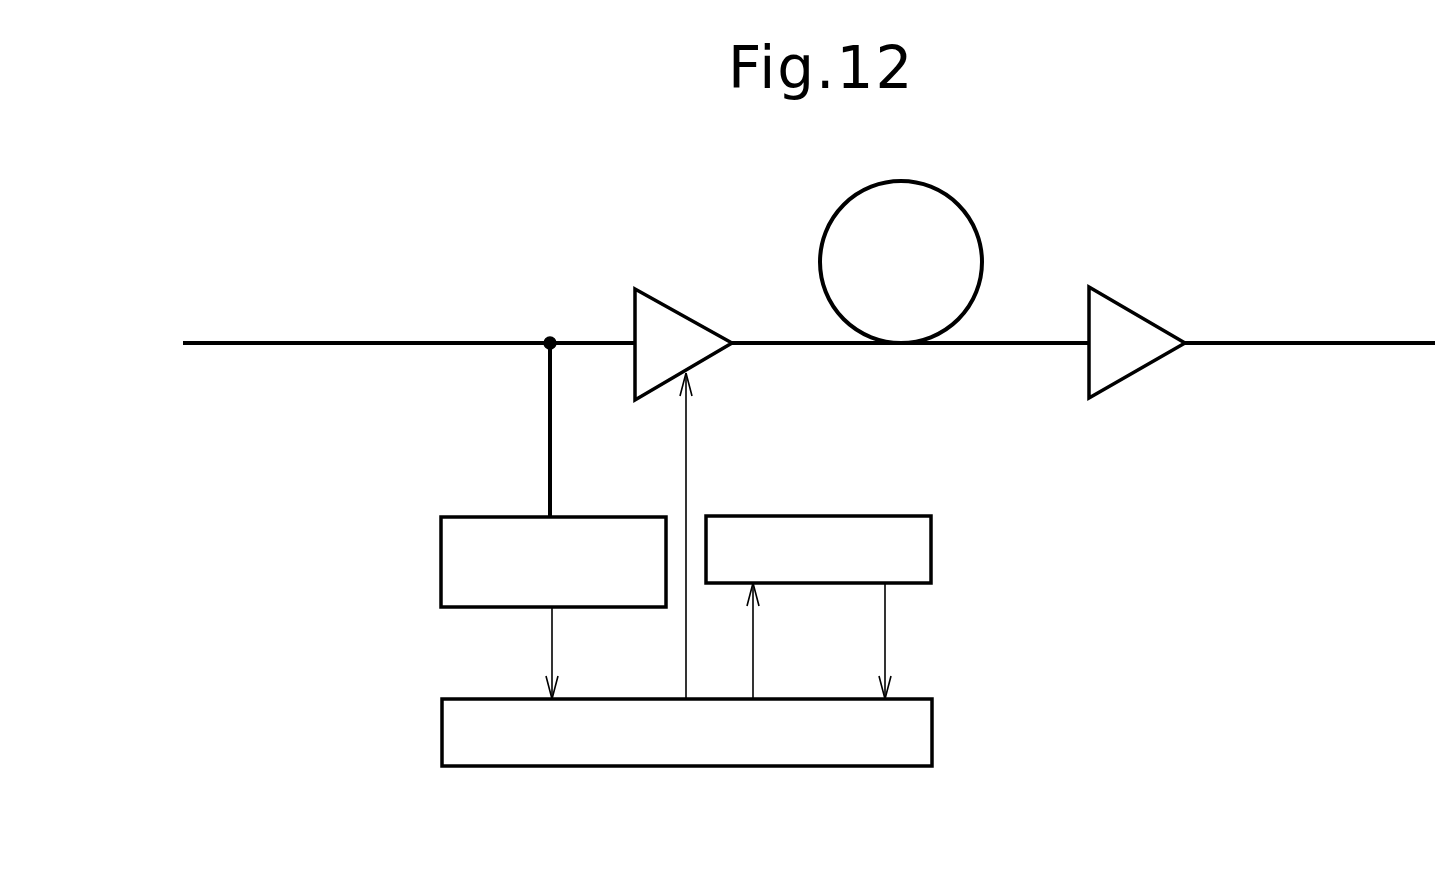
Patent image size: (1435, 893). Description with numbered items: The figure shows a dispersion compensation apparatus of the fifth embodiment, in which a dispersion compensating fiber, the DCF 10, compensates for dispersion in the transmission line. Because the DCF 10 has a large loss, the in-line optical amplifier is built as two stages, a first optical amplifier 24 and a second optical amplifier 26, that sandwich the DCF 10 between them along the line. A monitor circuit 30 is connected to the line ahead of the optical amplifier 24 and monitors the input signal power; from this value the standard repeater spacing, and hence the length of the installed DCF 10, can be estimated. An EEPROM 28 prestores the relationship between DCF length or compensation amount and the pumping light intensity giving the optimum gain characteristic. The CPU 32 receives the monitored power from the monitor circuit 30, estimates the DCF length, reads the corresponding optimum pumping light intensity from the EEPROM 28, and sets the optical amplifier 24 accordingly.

The DCF 10 is at (940, 180).
The optical amplifier 24 is at (700, 322).
The optical amplifier 26 is at (1153, 320).
The EEPROM 28 is at (853, 516).
The monitor circuit 30 is at (470, 517).
The CPU 32 is at (933, 729).